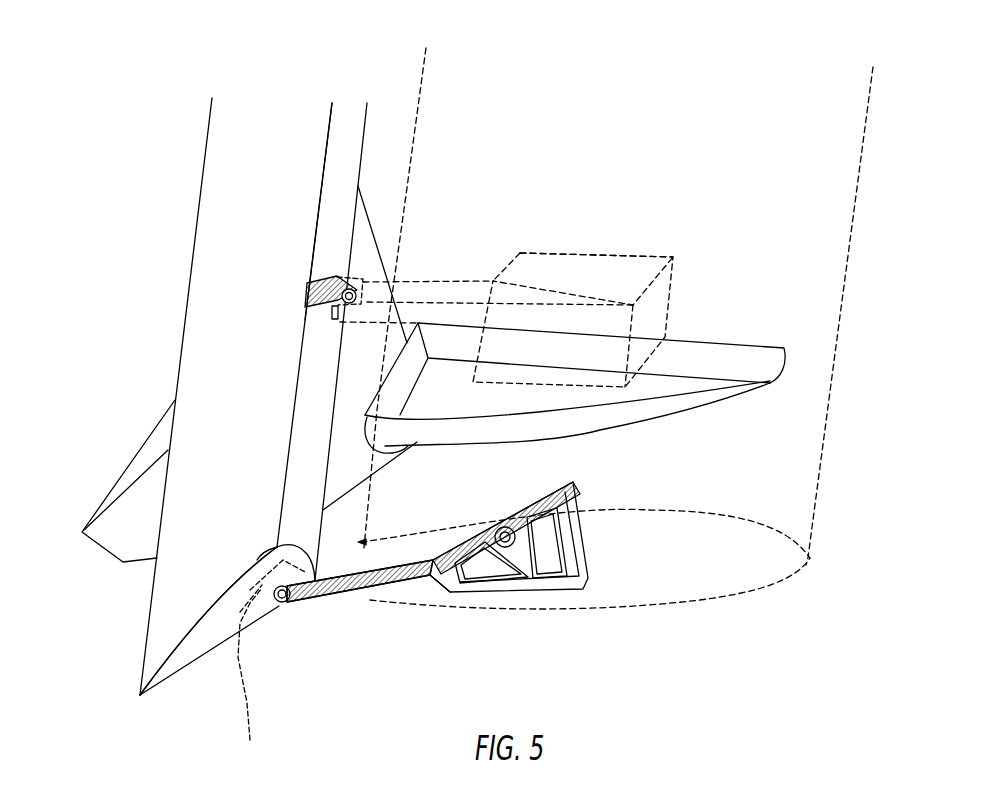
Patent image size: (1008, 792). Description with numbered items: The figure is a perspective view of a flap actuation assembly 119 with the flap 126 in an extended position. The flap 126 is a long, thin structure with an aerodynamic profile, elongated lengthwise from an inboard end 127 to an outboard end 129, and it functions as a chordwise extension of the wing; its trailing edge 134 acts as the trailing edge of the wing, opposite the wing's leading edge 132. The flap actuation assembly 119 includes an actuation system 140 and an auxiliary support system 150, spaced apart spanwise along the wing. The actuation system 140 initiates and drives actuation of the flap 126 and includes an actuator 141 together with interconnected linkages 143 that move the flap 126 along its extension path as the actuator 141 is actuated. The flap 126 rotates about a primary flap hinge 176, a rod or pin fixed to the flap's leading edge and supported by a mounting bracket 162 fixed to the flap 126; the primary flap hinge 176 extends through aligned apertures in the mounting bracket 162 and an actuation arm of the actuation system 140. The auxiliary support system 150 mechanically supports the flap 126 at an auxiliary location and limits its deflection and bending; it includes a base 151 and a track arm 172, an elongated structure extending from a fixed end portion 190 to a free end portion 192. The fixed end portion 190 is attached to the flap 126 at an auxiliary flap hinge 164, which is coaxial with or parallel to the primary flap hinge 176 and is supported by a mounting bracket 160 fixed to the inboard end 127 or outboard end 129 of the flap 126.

The flap actuation assembly 119 is at (634, 355).
The flap 126 is at (231, 396).
The inboard end 127 is at (209, 637).
The outboard end 129 is at (267, 183).
The leading edge 132 is at (637, 338).
The trailing edge 134 is at (112, 530).
The actuation system 140 is at (599, 277).
The actuator 141 is at (596, 214).
The linkages 143 is at (498, 257).
The auxiliary support system 150 is at (513, 573).
The base 151 is at (549, 540).
The mounting bracket 160 is at (251, 663).
The mounting bracket 162 is at (295, 268).
The auxiliary flap hinge 164 is at (313, 656).
The track arm 172 is at (433, 584).
The primary flap hinge 176 is at (421, 204).
The fixed end portion 190 is at (360, 606).
The free end portion 192 is at (448, 613).